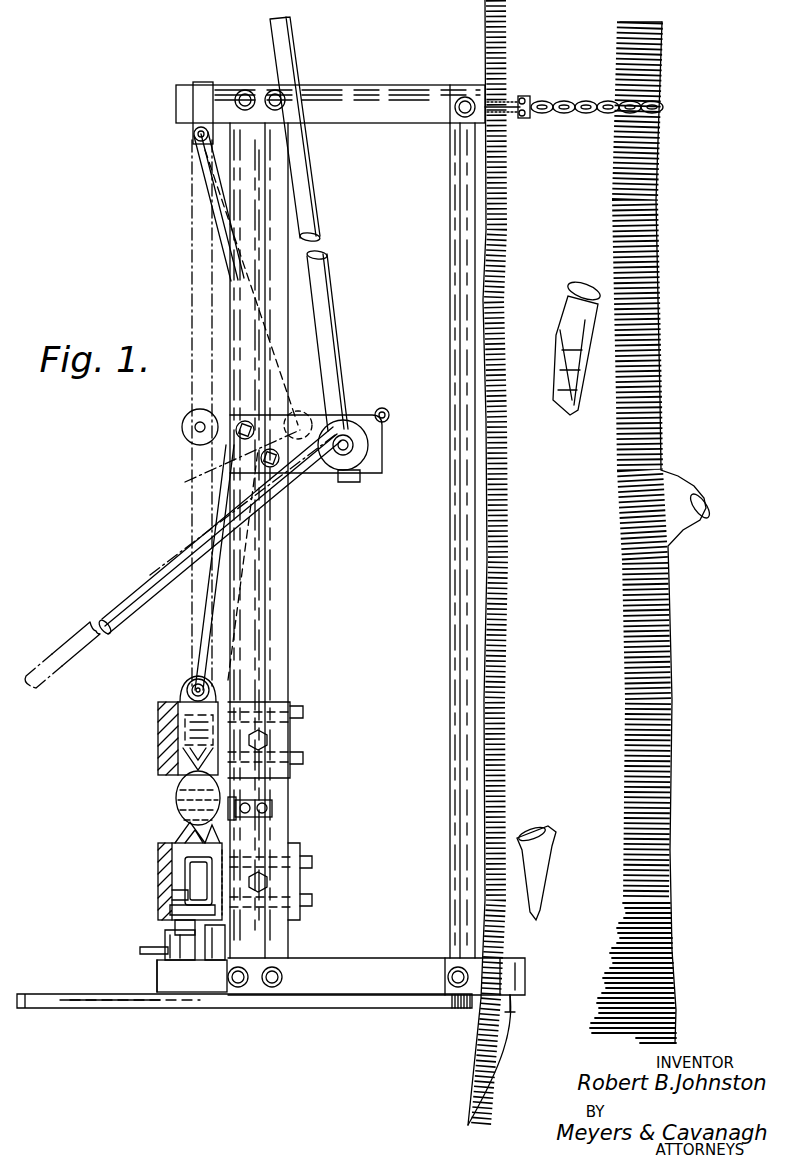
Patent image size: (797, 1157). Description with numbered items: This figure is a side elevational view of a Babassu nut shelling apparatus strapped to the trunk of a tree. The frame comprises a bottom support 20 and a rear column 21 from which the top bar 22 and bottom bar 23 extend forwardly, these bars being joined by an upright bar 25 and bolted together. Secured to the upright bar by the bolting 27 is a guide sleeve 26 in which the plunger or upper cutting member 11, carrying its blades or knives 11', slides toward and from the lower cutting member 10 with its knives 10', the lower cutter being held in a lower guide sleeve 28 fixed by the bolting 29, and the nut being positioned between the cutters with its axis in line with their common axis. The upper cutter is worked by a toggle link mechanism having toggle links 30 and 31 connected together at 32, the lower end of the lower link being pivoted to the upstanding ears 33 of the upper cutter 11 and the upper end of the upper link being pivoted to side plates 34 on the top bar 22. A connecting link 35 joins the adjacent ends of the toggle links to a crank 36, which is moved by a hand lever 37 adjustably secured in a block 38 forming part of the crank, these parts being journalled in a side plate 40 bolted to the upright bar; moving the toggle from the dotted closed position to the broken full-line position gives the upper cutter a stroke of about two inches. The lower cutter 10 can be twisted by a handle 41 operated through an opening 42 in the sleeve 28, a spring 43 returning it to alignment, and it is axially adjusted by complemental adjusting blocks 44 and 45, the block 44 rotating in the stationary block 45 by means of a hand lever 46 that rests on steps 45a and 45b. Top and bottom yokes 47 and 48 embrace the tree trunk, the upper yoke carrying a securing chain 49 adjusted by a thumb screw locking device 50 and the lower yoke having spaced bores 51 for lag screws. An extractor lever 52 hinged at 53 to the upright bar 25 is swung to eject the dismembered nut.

The lower cutting member 10 is at (146, 826).
The blades or knives 10' is at (177, 823).
The upper cutting member 11 is at (147, 736).
The blades or knives 11' is at (164, 764).
The bottom support 20 is at (346, 1000).
The rear column 21 is at (450, 795).
The top bar 22 is at (384, 123).
The bottom bar 23 is at (368, 968).
The upright bar 25 is at (290, 582).
The guide sleeve 26 is at (158, 716).
The bolting 27 is at (305, 760).
The lower guide sleeve 28 is at (158, 858).
The bolting 29 is at (303, 900).
The toggle link 30 is at (222, 205).
The toggle link 31 is at (190, 528).
The toggle link connection 32 is at (298, 411).
The upstanding ears 33 is at (185, 690).
The side plates 34 is at (200, 108).
The connecting link 35 is at (318, 405).
The crank 36 is at (352, 440).
The hand lever 37 is at (330, 300).
The block 38 is at (368, 446).
The side plate 40 is at (360, 478).
The handle 41 is at (172, 895).
The opening 42 is at (180, 880).
The spring 43 is at (185, 910).
The adjusting block 44 is at (172, 925).
The adjusting block 45 is at (190, 958).
The step 45a is at (160, 980).
The step 45b is at (222, 962).
The hand lever 46 is at (148, 953).
The top yoke 47 is at (497, 98).
The bottom yoke 48 is at (505, 1015).
The securing chain 49 is at (660, 106).
The thumb screw locking device 50 is at (520, 98).
The spaced bores 51 is at (492, 1058).
The hand operated lever 52 is at (176, 798).
The hinge 53 is at (272, 808).